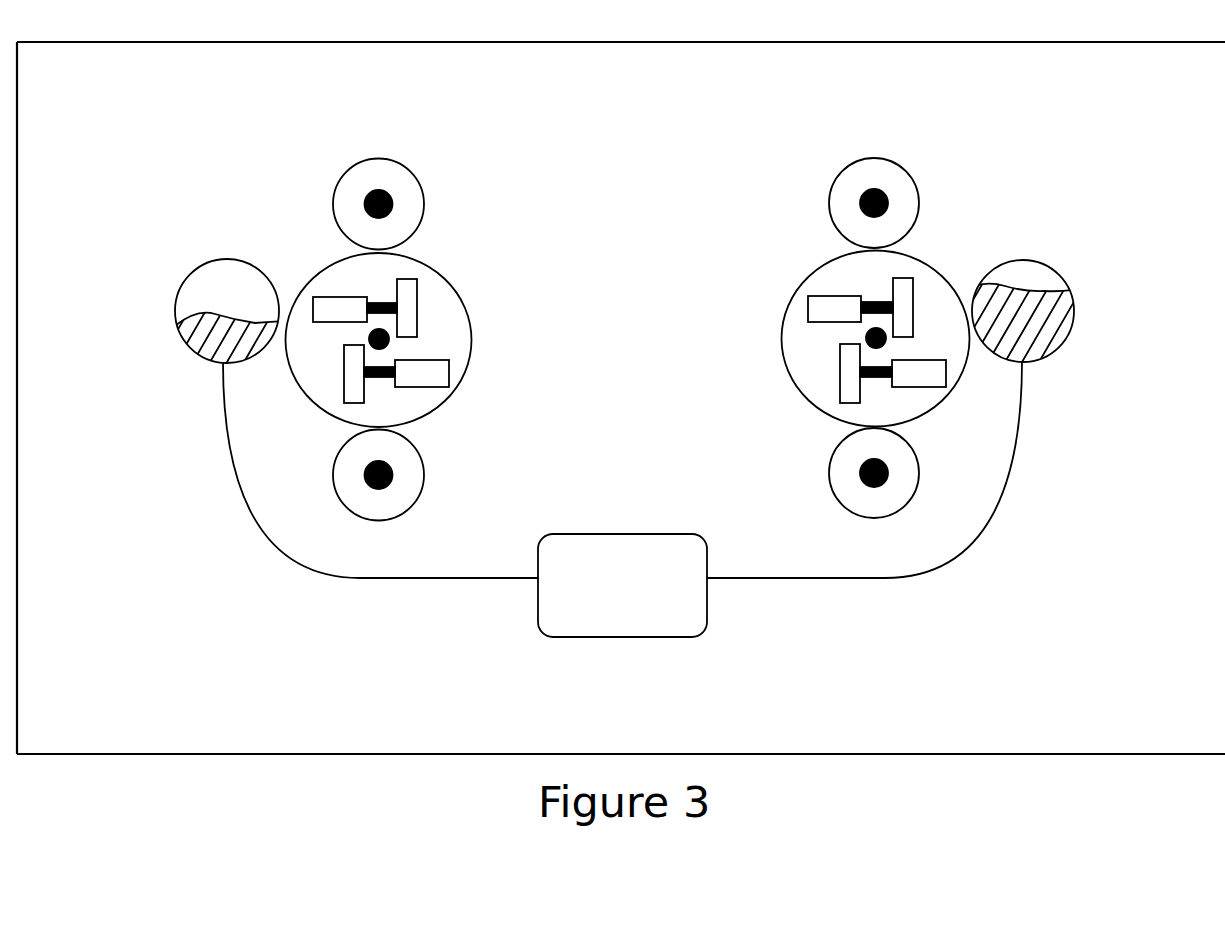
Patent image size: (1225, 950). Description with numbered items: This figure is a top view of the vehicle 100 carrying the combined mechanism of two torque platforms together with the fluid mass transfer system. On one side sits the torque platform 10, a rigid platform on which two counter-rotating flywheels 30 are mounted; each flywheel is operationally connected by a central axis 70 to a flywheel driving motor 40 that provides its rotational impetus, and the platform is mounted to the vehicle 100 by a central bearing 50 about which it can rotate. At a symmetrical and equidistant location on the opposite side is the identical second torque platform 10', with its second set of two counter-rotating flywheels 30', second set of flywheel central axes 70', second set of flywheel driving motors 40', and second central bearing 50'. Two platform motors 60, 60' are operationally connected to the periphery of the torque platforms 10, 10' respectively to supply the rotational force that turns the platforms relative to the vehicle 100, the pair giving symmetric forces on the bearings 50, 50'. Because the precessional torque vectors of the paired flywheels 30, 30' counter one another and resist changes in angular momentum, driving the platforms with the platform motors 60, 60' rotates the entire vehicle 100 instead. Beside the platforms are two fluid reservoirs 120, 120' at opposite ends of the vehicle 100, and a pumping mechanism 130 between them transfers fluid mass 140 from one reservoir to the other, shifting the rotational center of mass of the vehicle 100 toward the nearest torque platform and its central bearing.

The vehicle 100 is at (1210, 91).
The pumping mechanism 130 is at (652, 601).
The torque platform 10 is at (403, 365).
The flywheels 30 is at (383, 343).
The flywheel driving motors 40 is at (398, 323).
The central bearing 50 is at (459, 345).
The platform motor 60 is at (378, 357).
The central axis 70 is at (387, 349).
The fluid reservoir 120 is at (173, 311).
The fluid mass 140 is at (192, 347).
The second torque platform 10' is at (849, 363).
The second set of counter-rotating flywheels 30' is at (872, 310).
The second set of flywheel driving motors 40' is at (865, 357).
The second central bearing 50' is at (798, 330).
The second platform motor 60' is at (874, 345).
The second set of flywheel central axes 70' is at (878, 345).
The second fluid reservoir 120' is at (1056, 343).